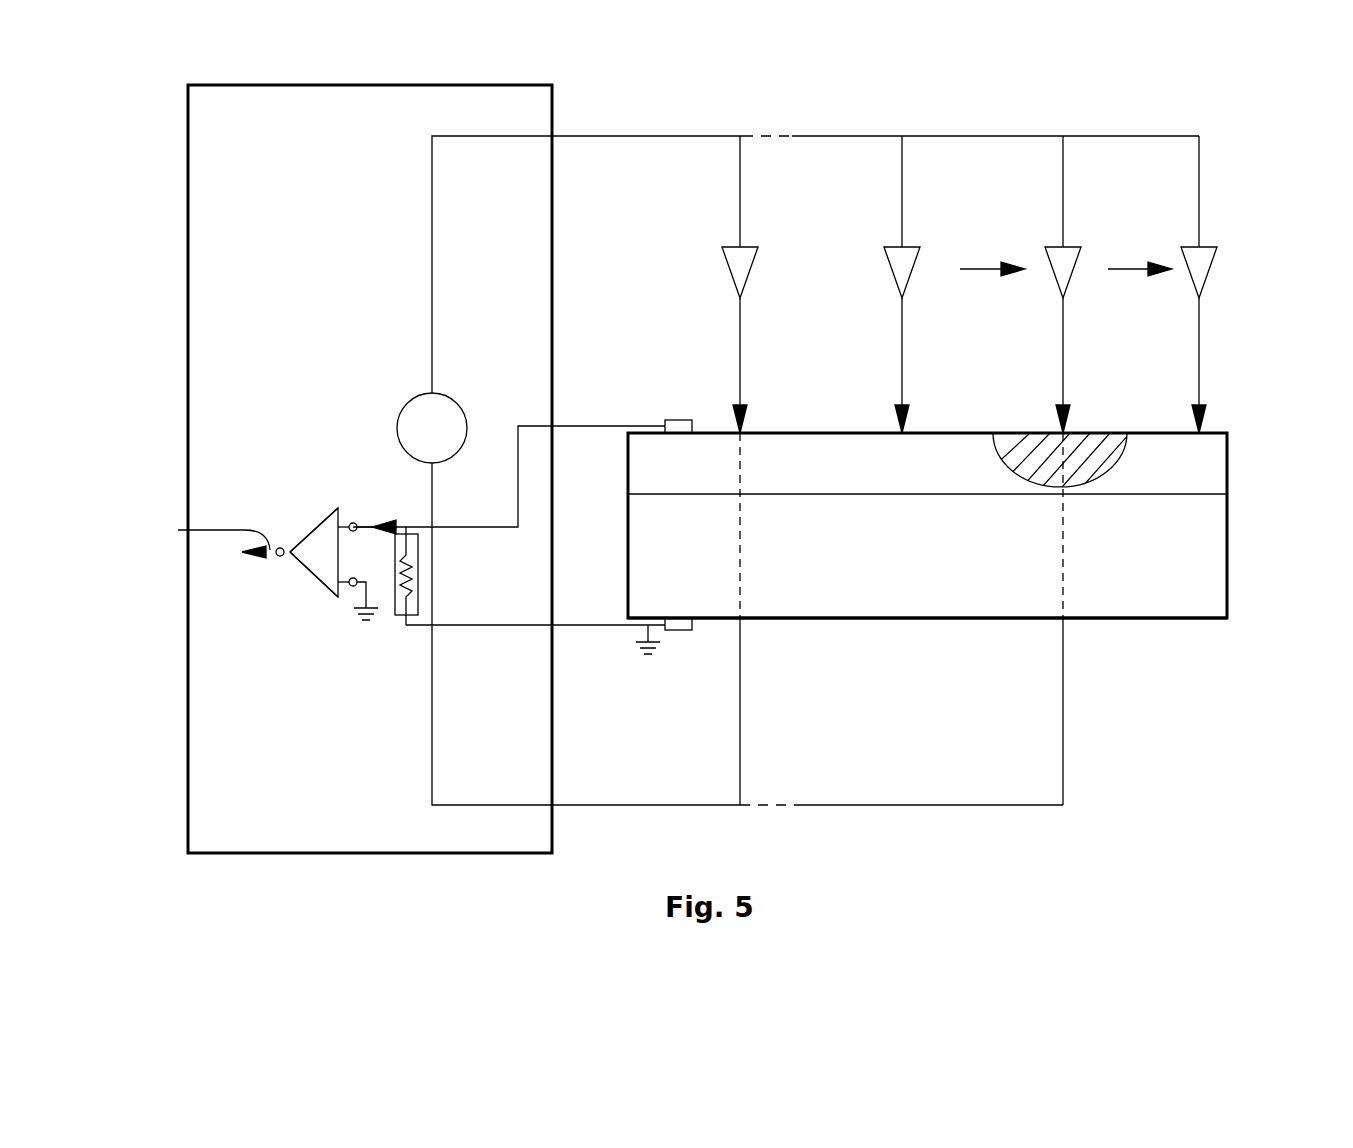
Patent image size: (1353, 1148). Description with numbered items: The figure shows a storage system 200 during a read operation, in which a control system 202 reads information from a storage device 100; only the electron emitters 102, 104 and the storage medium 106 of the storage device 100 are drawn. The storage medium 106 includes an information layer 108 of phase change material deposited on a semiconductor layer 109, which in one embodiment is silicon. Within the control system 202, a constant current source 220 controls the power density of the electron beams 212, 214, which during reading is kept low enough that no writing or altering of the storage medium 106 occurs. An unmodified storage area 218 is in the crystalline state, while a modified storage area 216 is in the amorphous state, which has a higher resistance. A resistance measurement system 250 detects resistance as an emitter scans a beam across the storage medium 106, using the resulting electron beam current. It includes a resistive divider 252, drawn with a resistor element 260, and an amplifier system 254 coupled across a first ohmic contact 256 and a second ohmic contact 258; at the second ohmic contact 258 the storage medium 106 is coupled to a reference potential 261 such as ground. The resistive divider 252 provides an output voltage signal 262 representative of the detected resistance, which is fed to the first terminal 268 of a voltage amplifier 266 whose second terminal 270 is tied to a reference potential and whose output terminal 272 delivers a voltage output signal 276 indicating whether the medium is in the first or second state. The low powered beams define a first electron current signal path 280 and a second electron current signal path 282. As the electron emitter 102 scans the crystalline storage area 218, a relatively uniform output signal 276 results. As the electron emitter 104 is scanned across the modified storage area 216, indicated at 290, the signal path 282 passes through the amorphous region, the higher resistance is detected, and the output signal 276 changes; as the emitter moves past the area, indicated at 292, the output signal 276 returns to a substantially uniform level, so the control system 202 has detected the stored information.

The storage device 100 is at (1243, 255).
The electron emitter 102 is at (745, 258).
The electron emitter 104 is at (908, 258).
The storage medium 106 is at (1232, 418).
The information layer 108 is at (1228, 463).
The semiconductor layer 109 is at (1228, 557).
The storage system 200 is at (140, 125).
The control system 202 is at (165, 280).
The electron beam 212 is at (740, 337).
The electron beam 214 is at (902, 338).
The modified storage area 216 is at (1097, 380).
The unmodified storage area 218 is at (790, 398).
The constant current source 220 is at (458, 405).
The resistance measurement system 250 is at (340, 712).
The resistive divider 252 is at (413, 655).
The amplifier system 254 is at (302, 596).
The first ohmic contact 256 is at (677, 420).
The second ohmic contact 258 is at (680, 630).
The resistor 260 is at (418, 593).
The reference potential 261 is at (367, 596).
The output voltage signal 262 is at (388, 527).
The voltage amplifier 266 is at (316, 528).
The first terminal 268 is at (348, 520).
The second terminal 270 is at (342, 600).
The output terminal 272 is at (280, 546).
The voltage output signal 276 is at (196, 538).
The first electron current signal path 280 is at (740, 543).
The second electron current signal path 282 is at (1063, 543).
The scanning across storage area 290 is at (985, 268).
The moving past storage area 292 is at (1130, 268).